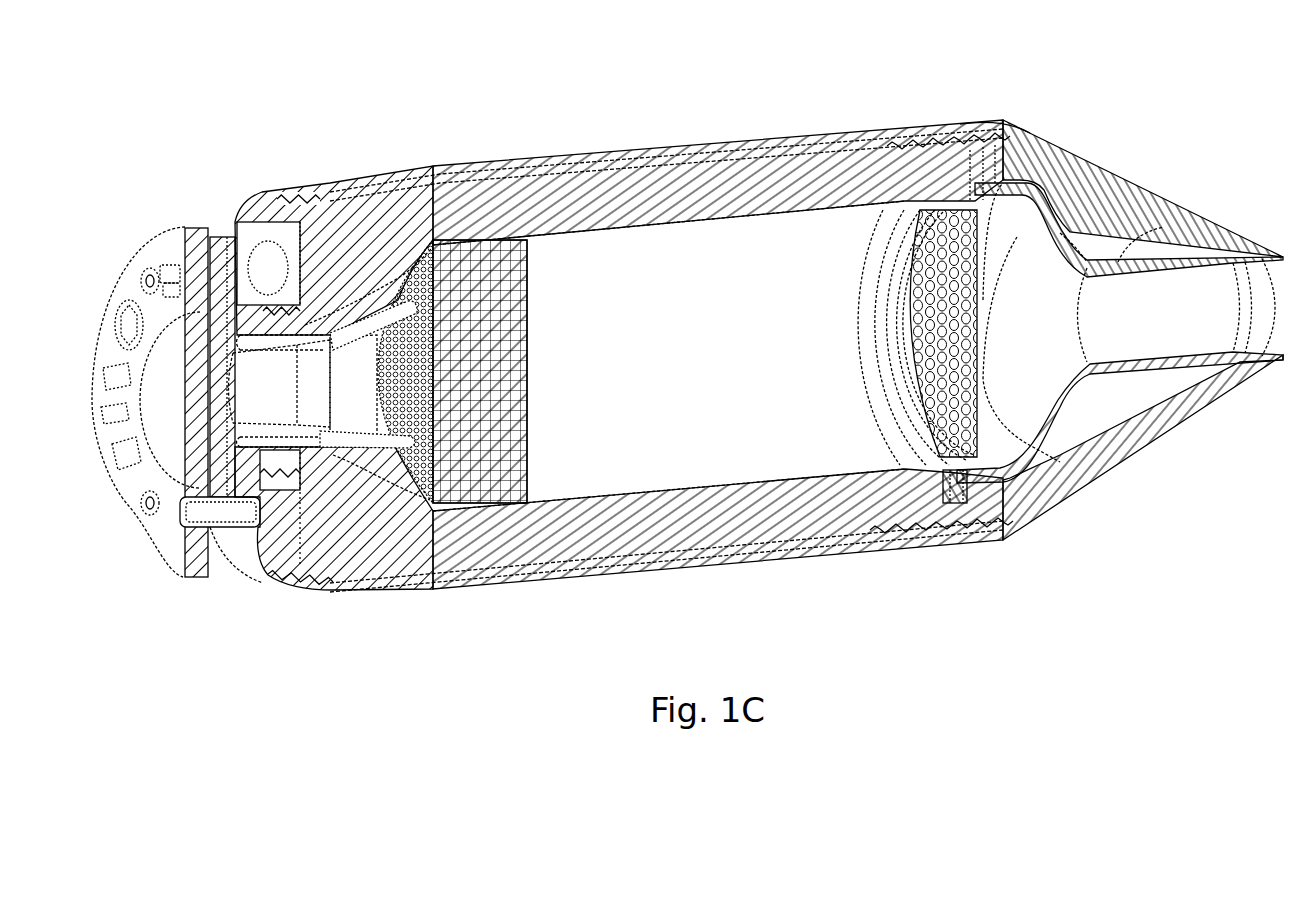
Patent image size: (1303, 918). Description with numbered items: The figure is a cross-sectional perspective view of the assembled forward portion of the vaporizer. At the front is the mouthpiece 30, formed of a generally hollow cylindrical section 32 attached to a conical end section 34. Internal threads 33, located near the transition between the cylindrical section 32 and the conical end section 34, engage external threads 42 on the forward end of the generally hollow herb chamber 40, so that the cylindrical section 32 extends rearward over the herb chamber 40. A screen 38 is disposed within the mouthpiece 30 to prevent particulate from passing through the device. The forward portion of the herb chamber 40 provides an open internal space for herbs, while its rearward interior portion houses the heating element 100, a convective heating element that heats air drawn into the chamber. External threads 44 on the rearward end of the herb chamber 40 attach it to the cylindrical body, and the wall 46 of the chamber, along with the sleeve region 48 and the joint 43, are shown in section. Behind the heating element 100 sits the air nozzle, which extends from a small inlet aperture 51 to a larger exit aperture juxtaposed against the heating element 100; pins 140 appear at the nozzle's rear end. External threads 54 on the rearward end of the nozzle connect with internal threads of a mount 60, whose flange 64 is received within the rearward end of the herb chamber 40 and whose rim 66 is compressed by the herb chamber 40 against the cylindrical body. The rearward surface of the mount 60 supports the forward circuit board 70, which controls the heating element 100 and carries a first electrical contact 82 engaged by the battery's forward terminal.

The mouthpiece 30 is at (1120, 298).
The cylindrical section 32 is at (678, 153).
The internal threads 33 is at (913, 142).
The conical end section 34 is at (1127, 183).
The screen 38 is at (973, 340).
The herb chamber 40 is at (686, 370).
The external threads 42 is at (940, 530).
The seal joint 43 is at (957, 477).
The external threads 44 is at (317, 192).
The housing wall 46 is at (695, 223).
The outer sleeve 48 is at (752, 157).
The inlet aperture 51 is at (279, 397).
The external threads 54 is at (268, 310).
The mount 60 is at (273, 533).
The flange 64 is at (332, 557).
The rim 66 is at (263, 577).
The forward circuit board 70 is at (157, 232).
The first electrical contact 82 is at (176, 405).
The heating element 100 is at (532, 477).
The pins 140 is at (532, 273).